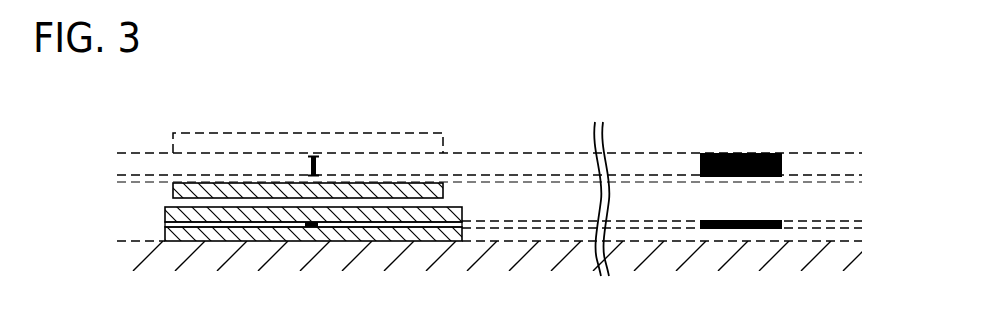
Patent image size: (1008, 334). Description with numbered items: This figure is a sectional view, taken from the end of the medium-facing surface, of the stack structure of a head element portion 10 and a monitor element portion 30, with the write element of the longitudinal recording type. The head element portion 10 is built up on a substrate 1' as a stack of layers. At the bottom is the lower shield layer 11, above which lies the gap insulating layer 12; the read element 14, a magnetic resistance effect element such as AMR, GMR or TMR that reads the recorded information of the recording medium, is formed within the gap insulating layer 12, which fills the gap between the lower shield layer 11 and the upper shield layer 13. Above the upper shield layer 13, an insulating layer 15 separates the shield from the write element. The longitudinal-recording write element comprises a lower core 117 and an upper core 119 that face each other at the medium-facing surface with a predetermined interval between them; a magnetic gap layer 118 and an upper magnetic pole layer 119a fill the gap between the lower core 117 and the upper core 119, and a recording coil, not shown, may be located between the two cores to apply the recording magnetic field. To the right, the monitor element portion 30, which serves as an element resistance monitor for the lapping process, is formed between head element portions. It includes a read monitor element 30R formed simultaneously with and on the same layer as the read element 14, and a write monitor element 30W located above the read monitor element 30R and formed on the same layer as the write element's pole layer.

The substrate / ground 1' is at (474, 257).
The head element portion 10 is at (298, 70).
The lower shield layer 11 is at (165, 237).
The gap insulating layer 12 is at (165, 225).
The upper shield layer 13 is at (165, 210).
The read element 14 is at (313, 229).
The insulating layer 15 is at (173, 201).
The lower core 117 is at (180, 185).
The magnetic gap layer 118 is at (208, 183).
The upper core 119 is at (428, 133).
The upper magnetic pole layer 119a is at (318, 165).
The monitor element portion 30 is at (746, 118).
The write monitor element 30W is at (772, 153).
The read monitor element 30R is at (772, 219).